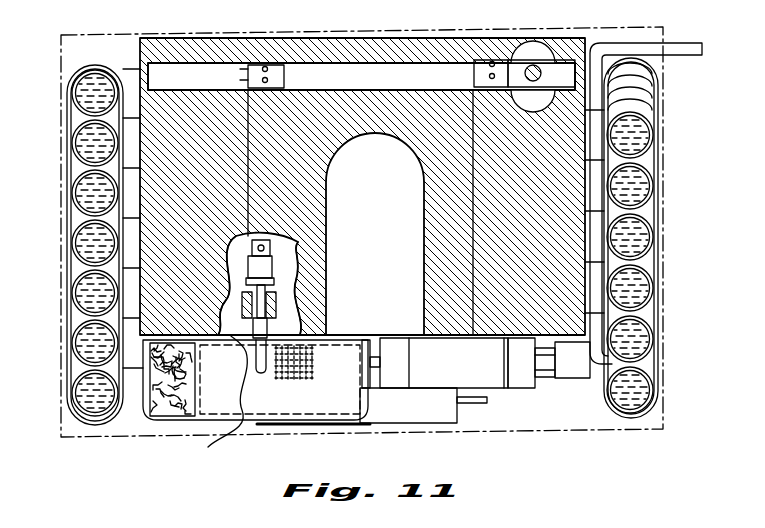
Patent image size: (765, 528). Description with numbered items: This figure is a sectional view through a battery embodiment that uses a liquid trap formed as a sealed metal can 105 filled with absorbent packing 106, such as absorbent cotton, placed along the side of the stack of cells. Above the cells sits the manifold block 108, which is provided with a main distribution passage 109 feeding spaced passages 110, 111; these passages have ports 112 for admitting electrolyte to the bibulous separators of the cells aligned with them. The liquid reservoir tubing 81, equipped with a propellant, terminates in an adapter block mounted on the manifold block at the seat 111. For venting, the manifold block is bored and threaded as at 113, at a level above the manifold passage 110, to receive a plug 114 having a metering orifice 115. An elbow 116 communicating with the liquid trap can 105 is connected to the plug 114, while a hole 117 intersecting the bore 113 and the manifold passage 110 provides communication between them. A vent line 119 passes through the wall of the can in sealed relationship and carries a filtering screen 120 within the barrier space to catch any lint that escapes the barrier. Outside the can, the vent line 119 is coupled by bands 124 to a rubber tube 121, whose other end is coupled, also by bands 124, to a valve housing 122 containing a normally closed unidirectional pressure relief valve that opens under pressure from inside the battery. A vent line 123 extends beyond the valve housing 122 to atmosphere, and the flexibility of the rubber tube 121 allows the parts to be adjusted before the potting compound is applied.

The reservoir tubing 81 is at (640, 116).
The sealed metal can 105 is at (337, 410).
The absorbent packing 106 is at (165, 420).
The manifold block 108 is at (448, 38).
The main distribution passage 109 is at (353, 70).
The manifold passage 110 is at (290, 65).
The manifold passage 111 is at (510, 66).
The ports 112 is at (248, 78).
The threaded bore 113 is at (250, 337).
The plug 114 is at (266, 318).
The metering orifice 115 is at (264, 292).
The elbow 116 is at (220, 401).
The hole 117 is at (266, 247).
The vent line 119 is at (378, 386).
The filtering screen 120 is at (278, 384).
The rubber tube 121 is at (440, 372).
The valve housing 122 is at (570, 370).
The vent line 123 is at (673, 47).
The bands 124 is at (506, 388).